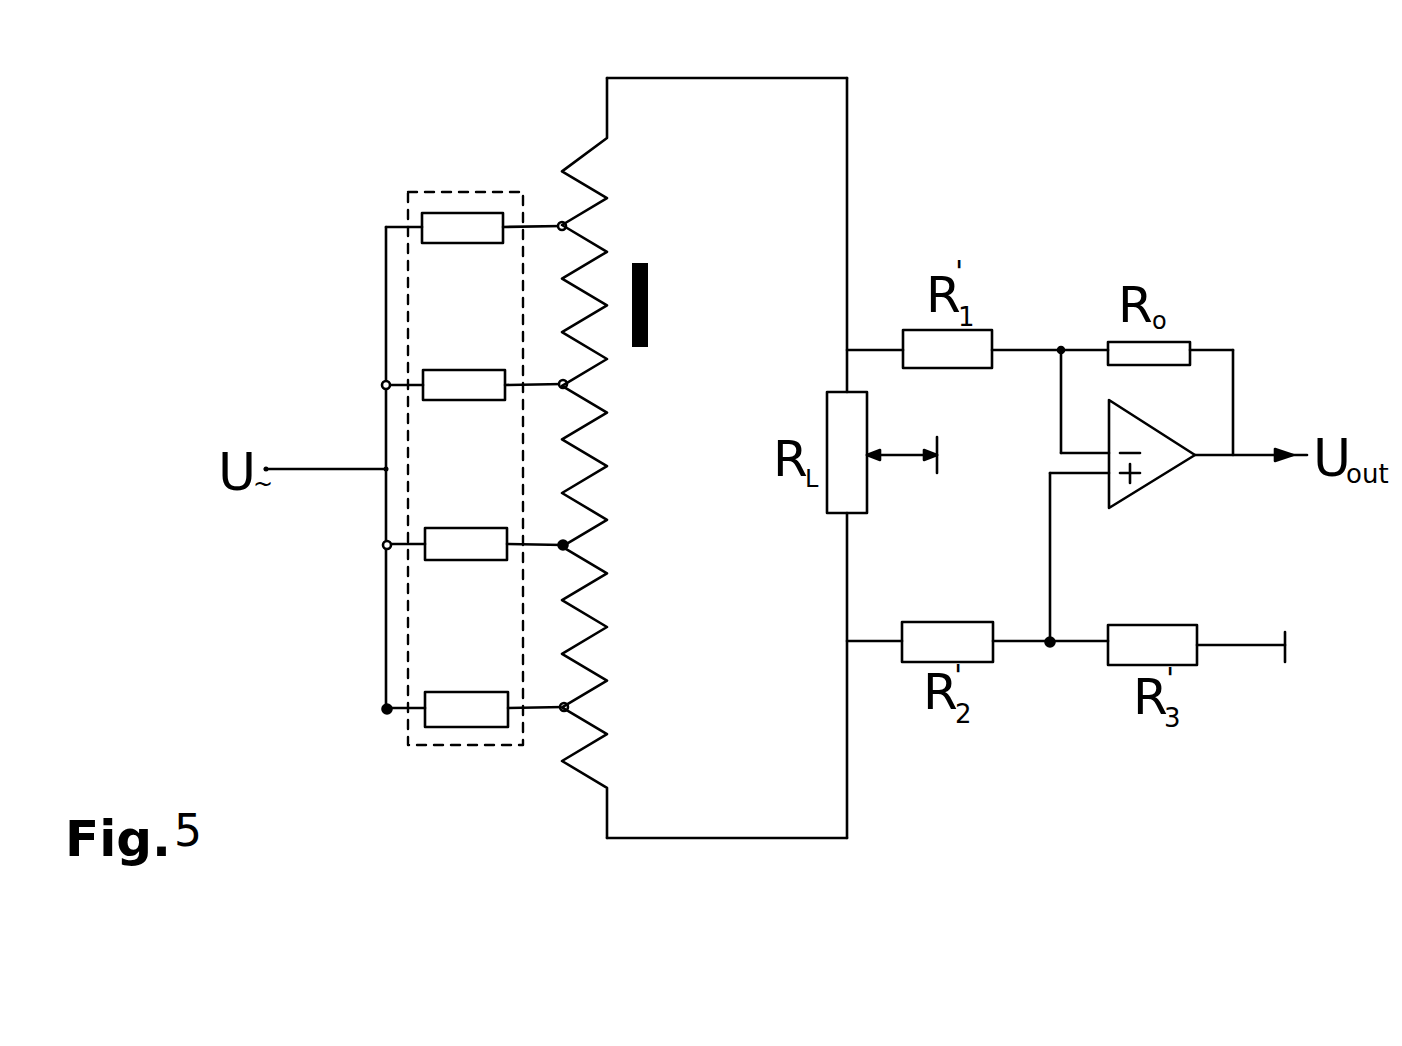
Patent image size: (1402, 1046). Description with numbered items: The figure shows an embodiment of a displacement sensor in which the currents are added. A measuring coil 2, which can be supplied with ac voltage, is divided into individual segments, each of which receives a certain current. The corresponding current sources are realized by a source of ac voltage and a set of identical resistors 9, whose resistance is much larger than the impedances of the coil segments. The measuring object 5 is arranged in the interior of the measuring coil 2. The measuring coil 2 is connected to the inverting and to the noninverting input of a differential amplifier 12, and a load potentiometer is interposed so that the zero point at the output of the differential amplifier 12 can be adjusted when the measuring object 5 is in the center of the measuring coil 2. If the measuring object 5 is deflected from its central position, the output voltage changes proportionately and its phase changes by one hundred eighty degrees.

The measuring coil 2 is at (590, 775).
The measuring object 5 is at (650, 308).
The resistors 9 is at (453, 220).
The differential amplifier 12 is at (1162, 465).